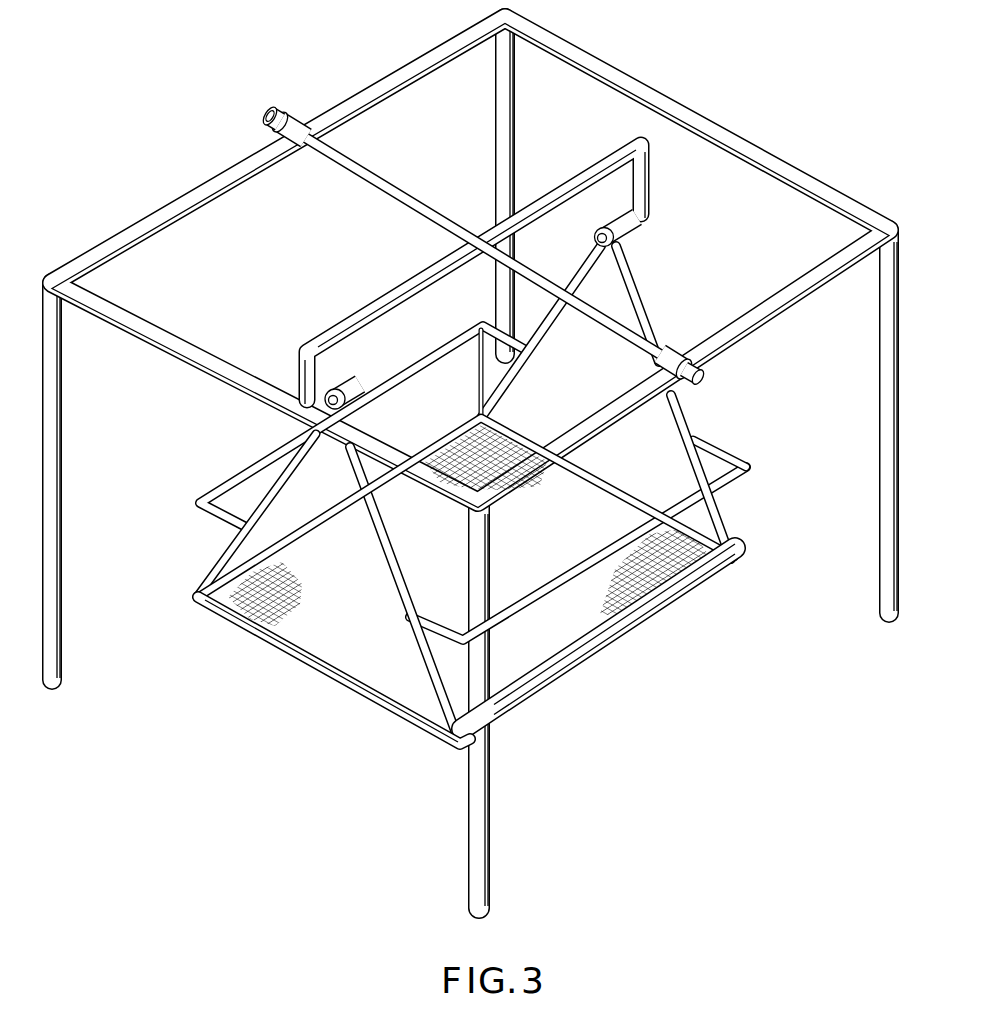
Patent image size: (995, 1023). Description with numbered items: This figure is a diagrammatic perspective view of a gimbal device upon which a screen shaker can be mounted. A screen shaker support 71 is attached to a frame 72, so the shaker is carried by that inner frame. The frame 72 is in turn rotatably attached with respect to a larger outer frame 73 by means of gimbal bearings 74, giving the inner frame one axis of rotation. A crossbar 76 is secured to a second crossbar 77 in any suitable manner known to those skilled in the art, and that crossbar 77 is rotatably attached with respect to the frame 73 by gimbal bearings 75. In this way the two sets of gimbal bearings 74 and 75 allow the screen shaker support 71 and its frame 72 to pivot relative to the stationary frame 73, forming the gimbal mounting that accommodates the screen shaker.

The screen shaker support 71 is at (333, 674).
The frame 72 is at (222, 535).
The frame 73 is at (131, 340).
The gimbal bearings 74 is at (340, 378).
The gimbal bearings 75 is at (300, 112).
The crossbar 76 is at (580, 176).
The crossbar 77 is at (412, 194).